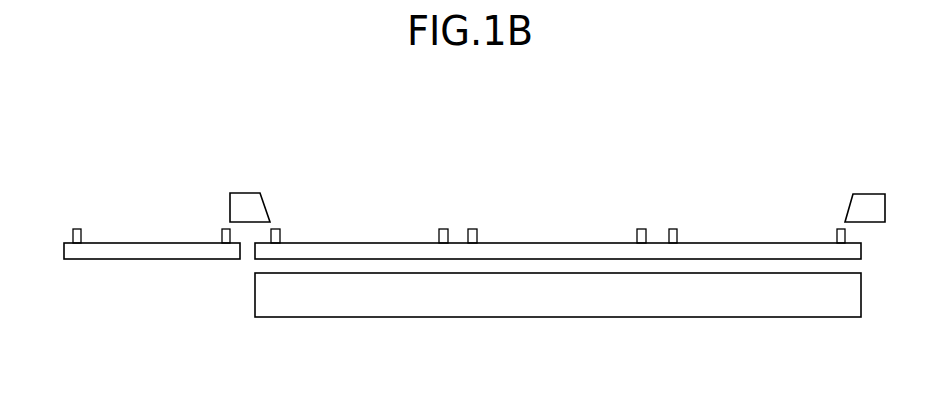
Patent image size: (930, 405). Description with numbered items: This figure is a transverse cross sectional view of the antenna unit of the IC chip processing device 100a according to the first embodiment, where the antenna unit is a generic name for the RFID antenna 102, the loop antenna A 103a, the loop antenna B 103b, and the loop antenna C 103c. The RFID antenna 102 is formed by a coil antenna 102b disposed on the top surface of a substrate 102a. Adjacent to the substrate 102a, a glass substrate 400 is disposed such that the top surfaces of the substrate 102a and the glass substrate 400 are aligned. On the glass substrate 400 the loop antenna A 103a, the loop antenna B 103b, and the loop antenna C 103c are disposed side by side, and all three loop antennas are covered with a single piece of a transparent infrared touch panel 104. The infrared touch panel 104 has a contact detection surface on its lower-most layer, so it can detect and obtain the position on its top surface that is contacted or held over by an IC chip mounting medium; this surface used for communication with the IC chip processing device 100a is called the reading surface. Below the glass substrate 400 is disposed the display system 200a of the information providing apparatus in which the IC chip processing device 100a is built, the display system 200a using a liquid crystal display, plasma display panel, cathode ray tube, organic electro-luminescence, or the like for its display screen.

The IC chip processing device 100a is at (652, 103).
The RFID antenna 102 is at (145, 243).
The substrate 102a is at (75, 255).
The coil antenna 102b is at (78, 244).
The loop antenna A 103a is at (276, 229).
The loop antenna B 103b is at (473, 229).
The loop antenna C 103c is at (673, 229).
The infrared touch panel 104 is at (872, 160).
The glass substrate 400 is at (657, 252).
The display system 200a is at (800, 302).